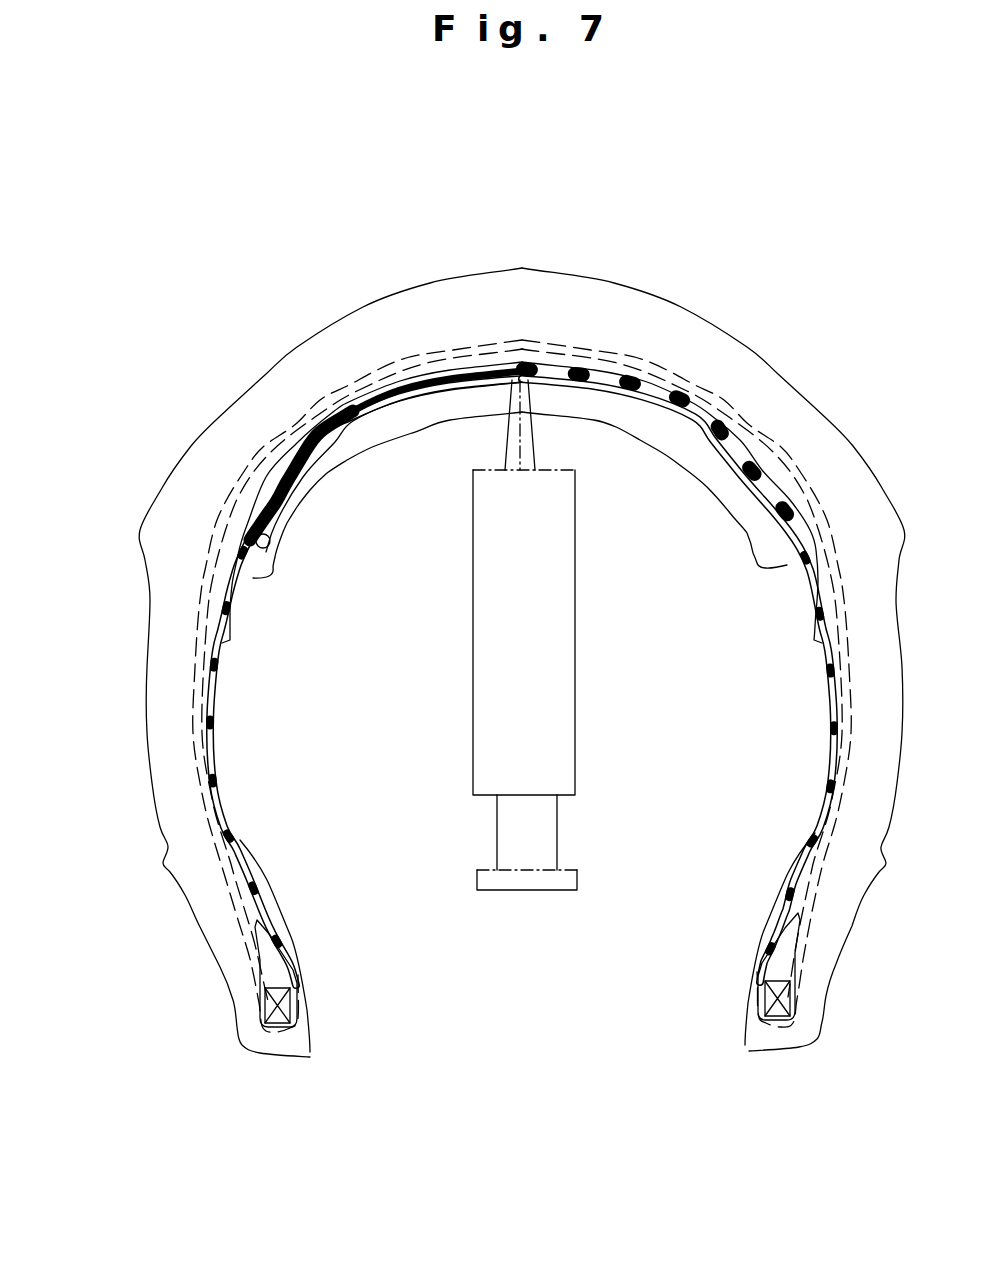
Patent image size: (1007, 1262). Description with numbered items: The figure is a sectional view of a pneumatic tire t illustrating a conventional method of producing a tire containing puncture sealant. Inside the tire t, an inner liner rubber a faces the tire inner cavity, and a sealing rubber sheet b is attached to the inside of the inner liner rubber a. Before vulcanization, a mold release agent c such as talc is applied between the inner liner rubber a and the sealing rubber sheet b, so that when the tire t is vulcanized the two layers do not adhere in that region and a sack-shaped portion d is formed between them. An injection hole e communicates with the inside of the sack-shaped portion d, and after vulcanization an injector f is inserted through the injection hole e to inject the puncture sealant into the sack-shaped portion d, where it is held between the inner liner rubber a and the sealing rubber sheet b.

The tire t is at (694, 256).
The inner liner rubber a is at (267, 497).
The sealing rubber sheet b is at (237, 545).
The mold release agent c is at (350, 413).
The sack-shaped portion d is at (424, 444).
The injection hole e is at (544, 397).
The injector f is at (575, 668).